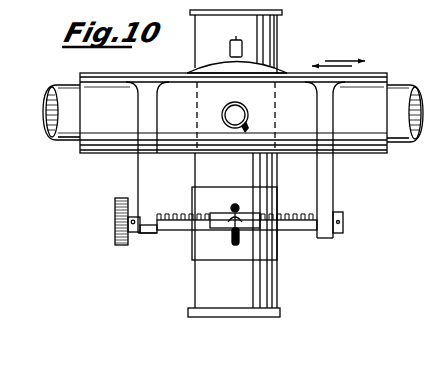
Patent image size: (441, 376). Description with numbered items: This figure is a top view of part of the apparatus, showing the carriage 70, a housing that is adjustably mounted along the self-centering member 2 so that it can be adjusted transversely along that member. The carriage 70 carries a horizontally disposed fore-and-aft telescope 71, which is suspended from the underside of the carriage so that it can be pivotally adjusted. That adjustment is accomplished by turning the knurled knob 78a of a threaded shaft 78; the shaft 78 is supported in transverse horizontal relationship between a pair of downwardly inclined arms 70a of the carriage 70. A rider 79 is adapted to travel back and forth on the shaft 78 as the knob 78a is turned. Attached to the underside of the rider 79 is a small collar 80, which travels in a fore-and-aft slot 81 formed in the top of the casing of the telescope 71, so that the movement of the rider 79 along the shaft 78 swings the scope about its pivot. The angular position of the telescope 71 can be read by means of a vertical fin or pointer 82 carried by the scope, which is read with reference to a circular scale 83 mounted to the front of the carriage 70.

The self-centering member 2 is at (62, 144).
The carriage 70 is at (126, 80).
The downwardly inclined arms 70a is at (138, 171).
The telescope 71 is at (277, 33).
The threaded shaft 78 is at (182, 230).
The knurled knob 78a is at (116, 245).
The rider 79 is at (255, 226).
The small collar 80 is at (232, 245).
The fore-and-aft slot 81 is at (231, 206).
The vertical fin or pointer 82 is at (230, 40).
The circular scale 83 is at (281, 70).